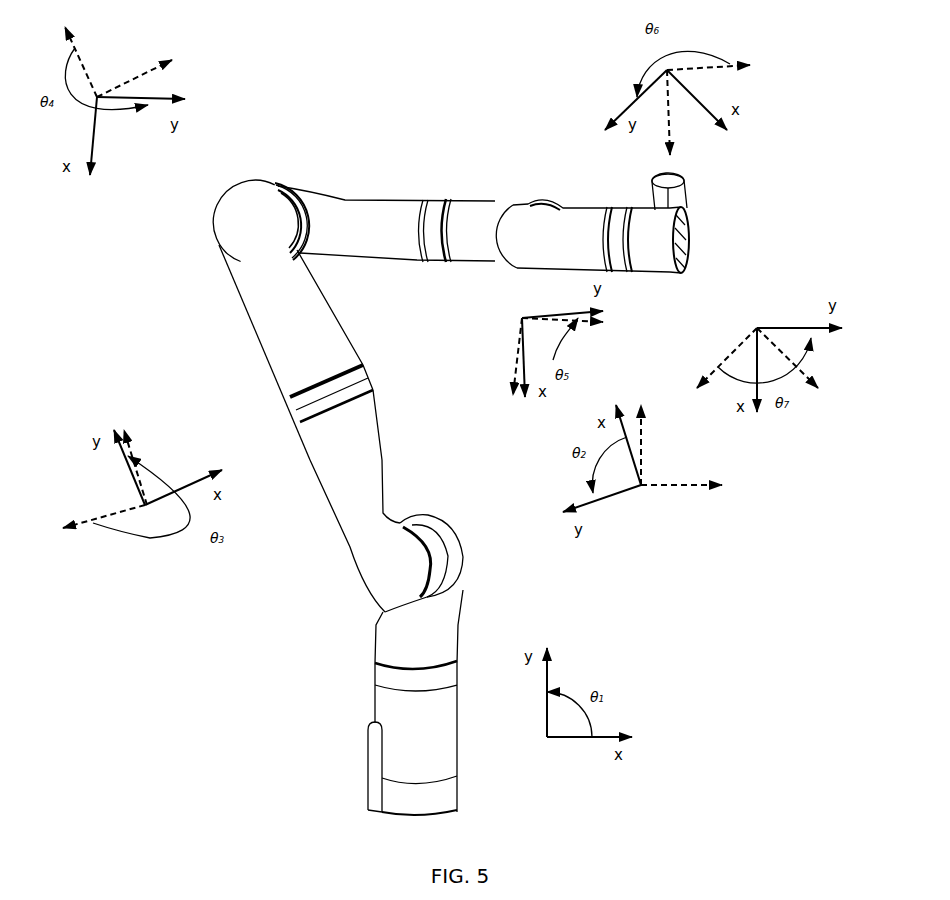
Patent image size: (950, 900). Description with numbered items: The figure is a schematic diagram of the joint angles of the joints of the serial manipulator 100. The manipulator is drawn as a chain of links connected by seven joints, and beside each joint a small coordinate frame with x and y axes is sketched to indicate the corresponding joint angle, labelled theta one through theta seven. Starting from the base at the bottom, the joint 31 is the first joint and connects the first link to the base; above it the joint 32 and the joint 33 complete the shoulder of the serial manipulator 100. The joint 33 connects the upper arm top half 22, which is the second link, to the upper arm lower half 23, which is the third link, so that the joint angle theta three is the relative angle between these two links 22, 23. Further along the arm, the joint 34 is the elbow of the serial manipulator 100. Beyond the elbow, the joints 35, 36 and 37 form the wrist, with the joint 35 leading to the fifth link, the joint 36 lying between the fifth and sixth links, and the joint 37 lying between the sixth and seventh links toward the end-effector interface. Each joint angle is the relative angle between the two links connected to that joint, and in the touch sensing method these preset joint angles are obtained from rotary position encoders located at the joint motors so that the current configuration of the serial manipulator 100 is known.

The serial manipulator 100 is at (437, 55).
The upper arm top half 22 is at (368, 510).
The upper arm lower half 23 is at (270, 295).
The joint 31 is at (442, 677).
The joint 32 is at (438, 548).
The joint 33 is at (300, 404).
The joint 34 is at (280, 188).
The joint 35 is at (430, 245).
The joint 36 is at (538, 208).
The joint 37 is at (617, 255).